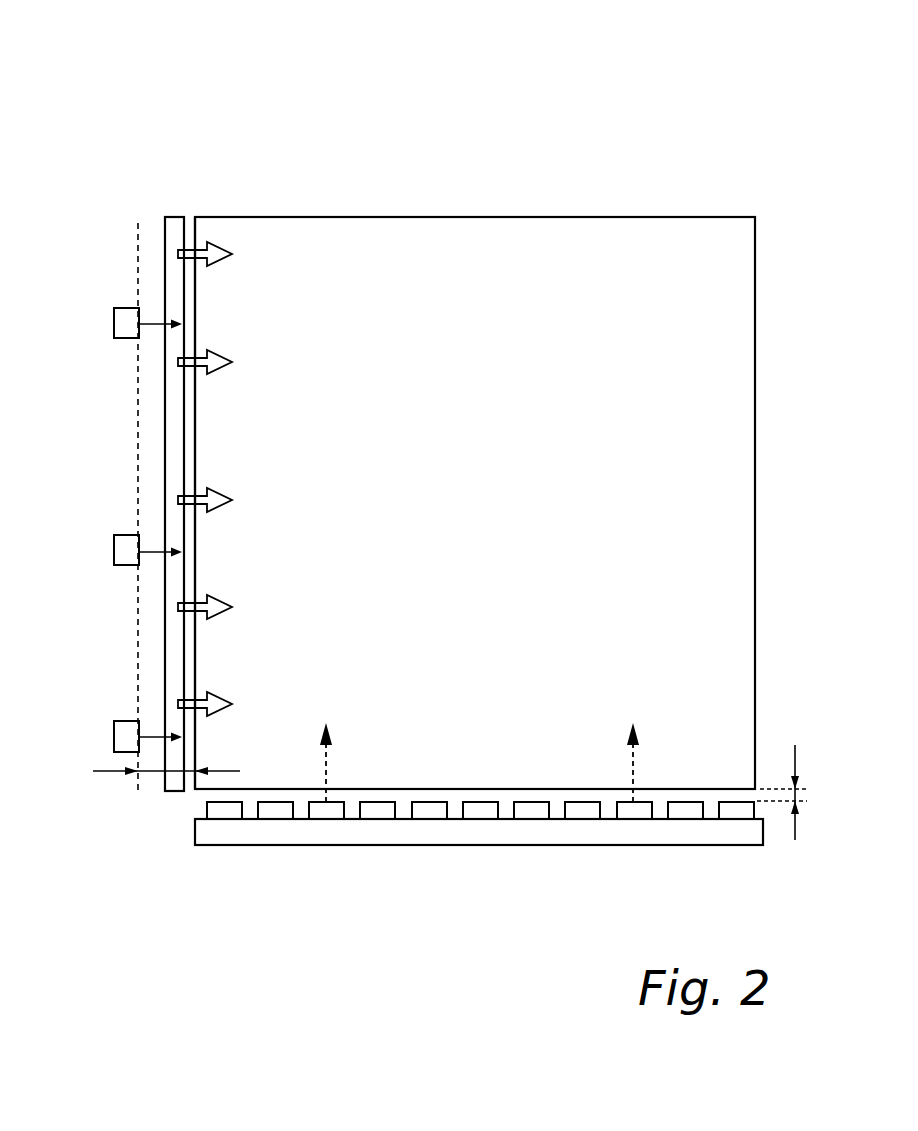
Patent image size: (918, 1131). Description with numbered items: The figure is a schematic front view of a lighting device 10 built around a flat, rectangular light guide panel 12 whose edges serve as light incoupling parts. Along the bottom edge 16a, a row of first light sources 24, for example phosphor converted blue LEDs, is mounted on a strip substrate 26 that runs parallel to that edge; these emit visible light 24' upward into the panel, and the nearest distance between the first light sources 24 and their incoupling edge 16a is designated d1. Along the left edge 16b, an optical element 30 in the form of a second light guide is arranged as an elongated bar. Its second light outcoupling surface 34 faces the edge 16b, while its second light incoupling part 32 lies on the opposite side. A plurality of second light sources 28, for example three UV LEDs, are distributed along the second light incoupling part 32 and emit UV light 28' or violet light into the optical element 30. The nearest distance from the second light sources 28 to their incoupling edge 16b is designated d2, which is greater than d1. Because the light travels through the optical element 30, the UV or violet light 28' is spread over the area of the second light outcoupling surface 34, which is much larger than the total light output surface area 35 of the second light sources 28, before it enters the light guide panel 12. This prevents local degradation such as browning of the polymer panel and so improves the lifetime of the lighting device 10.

The lighting device 10 is at (572, 176).
The light guide panel 12 is at (771, 241).
The edge 16a is at (481, 789).
The edge 16b is at (194, 562).
The first light sources 24 is at (480, 857).
The visible light 24' is at (515, 758).
The strip substrate 26 is at (555, 832).
The second light source 28 is at (92, 522).
The UV light 28' is at (110, 586).
The optical element 30 is at (167, 206).
The second light incoupling part 32 is at (165, 470).
The second light outcoupling surface 34 is at (186, 395).
The light output surface area 35 is at (137, 334).
The distance d1 is at (795, 794).
The distance d2 is at (165, 786).